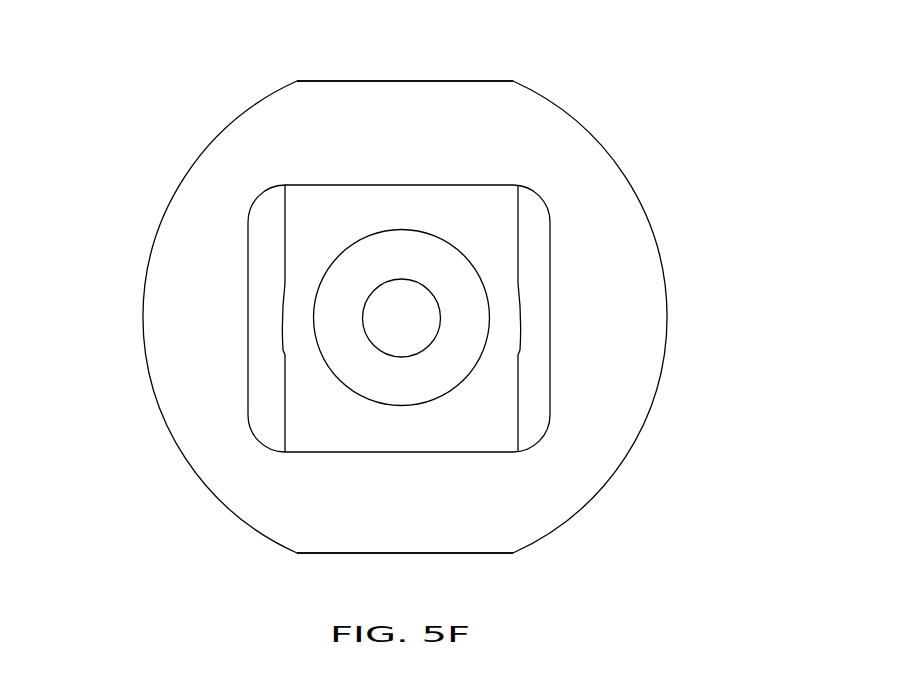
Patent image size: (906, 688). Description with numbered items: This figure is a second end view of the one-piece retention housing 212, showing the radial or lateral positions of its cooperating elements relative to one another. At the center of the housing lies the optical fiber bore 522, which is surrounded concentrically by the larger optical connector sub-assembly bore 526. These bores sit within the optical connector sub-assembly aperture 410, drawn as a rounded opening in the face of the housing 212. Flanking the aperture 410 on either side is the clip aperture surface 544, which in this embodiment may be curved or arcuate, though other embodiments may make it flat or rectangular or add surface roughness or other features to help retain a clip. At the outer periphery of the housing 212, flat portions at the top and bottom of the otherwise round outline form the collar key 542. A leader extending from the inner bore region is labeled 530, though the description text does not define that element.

The one-piece retention housing 212 is at (675, 93).
The collar key 542 is at (453, 80).
The optical connector sub-assembly aperture 410 is at (248, 388).
The clip aperture surface 544 is at (272, 255).
The optical connector sub-assembly bore 526 is at (453, 343).
The optical fiber bore 522 is at (410, 323).
The inner opening 530 is at (395, 357).